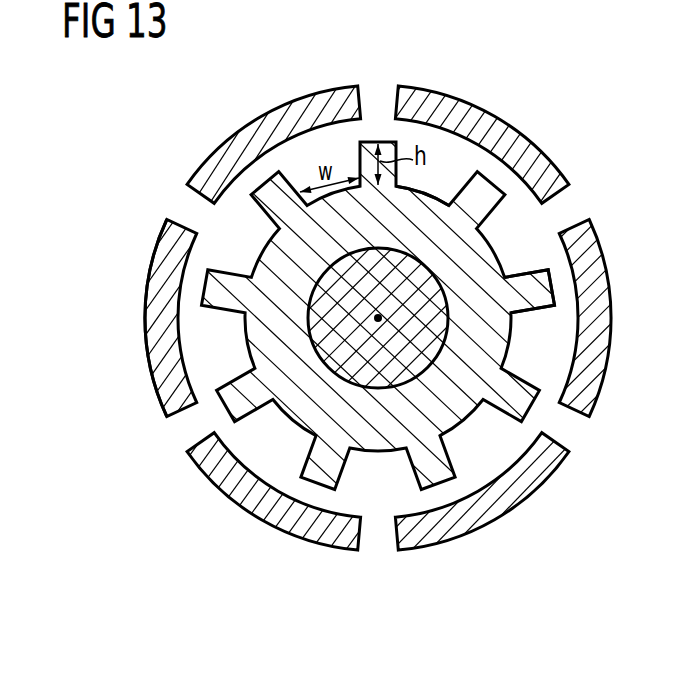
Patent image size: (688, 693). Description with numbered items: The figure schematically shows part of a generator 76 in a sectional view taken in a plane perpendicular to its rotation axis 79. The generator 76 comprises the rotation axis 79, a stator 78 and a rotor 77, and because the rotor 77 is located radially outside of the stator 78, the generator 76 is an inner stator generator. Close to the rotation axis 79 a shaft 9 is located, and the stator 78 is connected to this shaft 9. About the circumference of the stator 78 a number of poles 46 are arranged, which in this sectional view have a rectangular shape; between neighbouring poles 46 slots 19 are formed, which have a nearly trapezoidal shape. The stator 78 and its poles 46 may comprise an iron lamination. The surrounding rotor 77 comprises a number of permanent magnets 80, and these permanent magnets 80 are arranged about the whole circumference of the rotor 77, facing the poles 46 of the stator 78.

The shaft 9 is at (432, 322).
The slot 19 is at (442, 177).
The pole 46 is at (537, 284).
The generator 76 is at (130, 228).
The rotor 77 is at (449, 86).
The stator 78 is at (262, 341).
The rotation axis 79 is at (379, 322).
The permanent magnet 80 is at (257, 132).